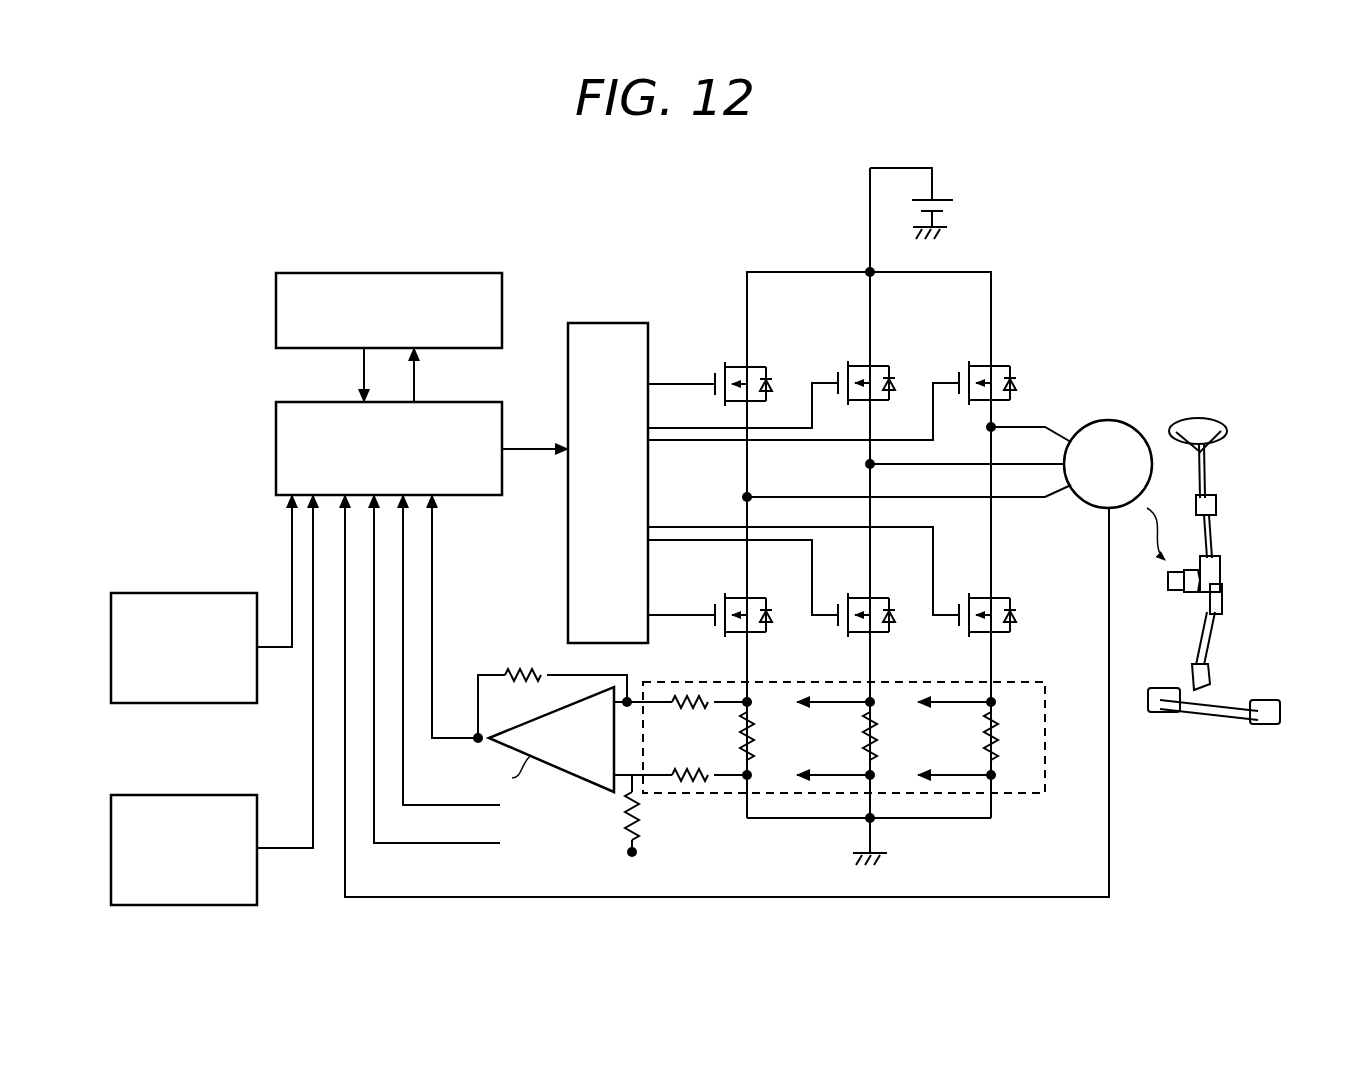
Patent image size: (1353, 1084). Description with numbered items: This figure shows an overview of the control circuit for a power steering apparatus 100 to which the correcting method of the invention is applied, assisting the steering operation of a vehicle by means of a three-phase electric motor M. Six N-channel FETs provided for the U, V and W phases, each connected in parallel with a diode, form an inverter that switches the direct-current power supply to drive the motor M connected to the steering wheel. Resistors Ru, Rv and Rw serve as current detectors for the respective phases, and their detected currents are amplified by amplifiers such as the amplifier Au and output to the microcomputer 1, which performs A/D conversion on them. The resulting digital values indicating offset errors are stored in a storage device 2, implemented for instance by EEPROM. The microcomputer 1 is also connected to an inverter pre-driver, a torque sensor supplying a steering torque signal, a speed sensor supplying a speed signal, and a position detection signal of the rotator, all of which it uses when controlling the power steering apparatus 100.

The microcomputer 1 is at (276, 430).
The storage device 2 is at (276, 290).
The power steering apparatus 100 is at (1110, 234).